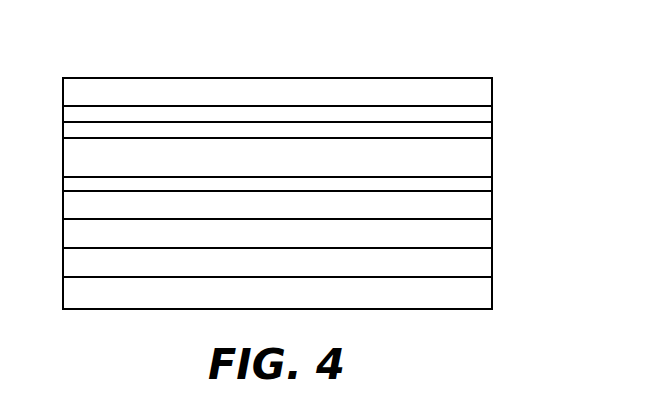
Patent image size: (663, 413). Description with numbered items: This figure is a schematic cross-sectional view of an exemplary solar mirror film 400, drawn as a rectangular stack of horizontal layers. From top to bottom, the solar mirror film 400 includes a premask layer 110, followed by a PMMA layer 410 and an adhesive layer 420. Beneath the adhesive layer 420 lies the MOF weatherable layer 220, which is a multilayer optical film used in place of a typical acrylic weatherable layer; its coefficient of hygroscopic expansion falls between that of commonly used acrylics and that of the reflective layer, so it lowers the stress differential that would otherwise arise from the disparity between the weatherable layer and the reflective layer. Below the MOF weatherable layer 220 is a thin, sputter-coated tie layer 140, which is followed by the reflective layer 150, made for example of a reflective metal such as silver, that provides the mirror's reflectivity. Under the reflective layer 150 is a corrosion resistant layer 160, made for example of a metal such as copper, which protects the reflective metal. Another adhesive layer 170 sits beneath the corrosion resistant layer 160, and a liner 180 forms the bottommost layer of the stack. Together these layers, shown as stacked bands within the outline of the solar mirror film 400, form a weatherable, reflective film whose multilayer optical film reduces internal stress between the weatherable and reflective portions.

The solar mirror film 400 is at (133, 50).
The premask layer 110 is at (492, 91).
The PMMA layer 410 is at (492, 112).
The adhesive layer 420 is at (492, 127).
The MOF weatherable layer 220 is at (492, 158).
The tie layer 140 is at (492, 183).
The reflective layer 150 is at (492, 200).
The corrosion resistant layer 160 is at (492, 238).
The adhesive layer 170 is at (492, 258).
The liner 180 is at (492, 296).